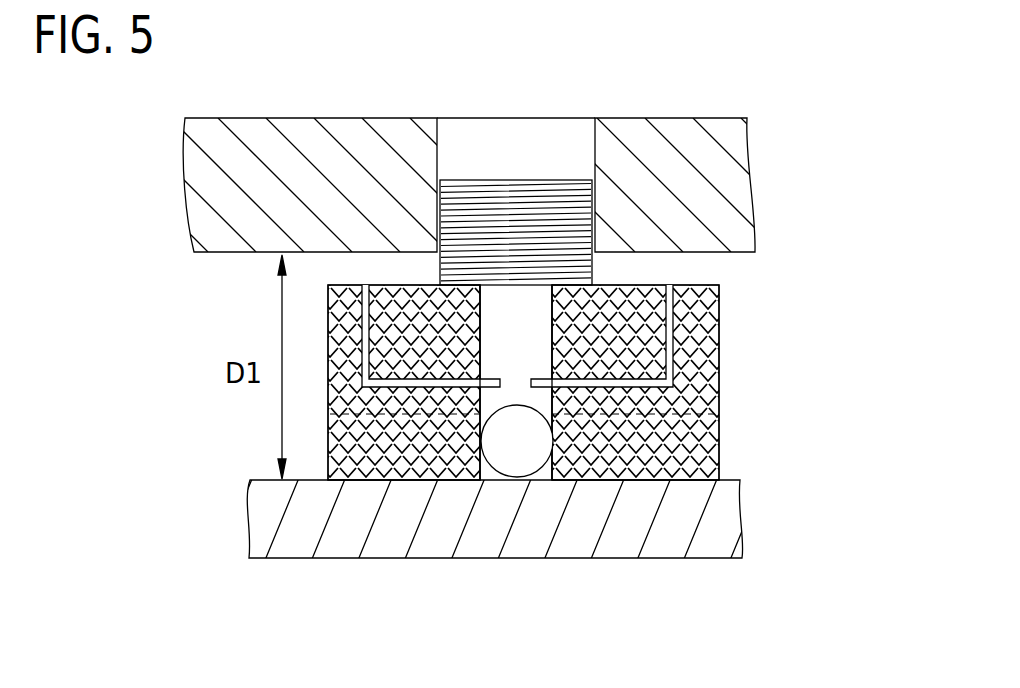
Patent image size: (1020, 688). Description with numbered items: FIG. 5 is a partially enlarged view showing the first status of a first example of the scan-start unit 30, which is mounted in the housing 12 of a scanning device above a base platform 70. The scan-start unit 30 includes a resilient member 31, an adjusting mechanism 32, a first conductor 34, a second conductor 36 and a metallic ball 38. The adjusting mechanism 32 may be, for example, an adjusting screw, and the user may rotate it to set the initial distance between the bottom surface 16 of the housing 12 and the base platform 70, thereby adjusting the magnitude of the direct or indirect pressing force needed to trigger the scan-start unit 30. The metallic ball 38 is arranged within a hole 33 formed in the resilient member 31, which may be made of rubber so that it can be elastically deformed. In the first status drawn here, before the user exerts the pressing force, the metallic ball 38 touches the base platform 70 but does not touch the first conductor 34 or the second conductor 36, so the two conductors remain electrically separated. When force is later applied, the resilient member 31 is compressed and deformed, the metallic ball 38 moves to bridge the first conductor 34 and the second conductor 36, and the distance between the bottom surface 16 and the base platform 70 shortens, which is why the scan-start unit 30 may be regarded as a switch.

The housing 12 is at (203, 185).
The bottom surface 16 is at (710, 253).
The scan-start unit 30 is at (519, 462).
The resilient member 31 is at (493, 462).
The adjusting mechanism 32 is at (498, 180).
The hole 33 is at (490, 479).
The first conductor 34 is at (360, 322).
The second conductor 36 is at (703, 307).
The metallic ball 38 is at (535, 438).
The base platform 70 is at (258, 528).